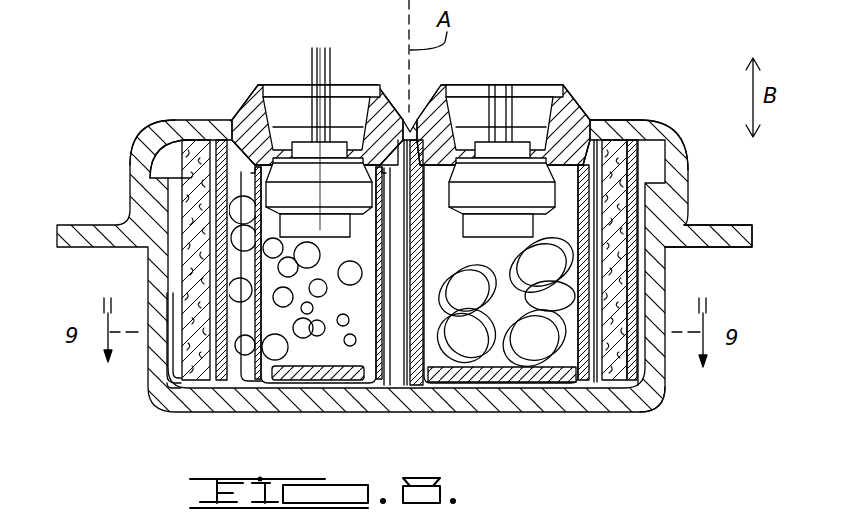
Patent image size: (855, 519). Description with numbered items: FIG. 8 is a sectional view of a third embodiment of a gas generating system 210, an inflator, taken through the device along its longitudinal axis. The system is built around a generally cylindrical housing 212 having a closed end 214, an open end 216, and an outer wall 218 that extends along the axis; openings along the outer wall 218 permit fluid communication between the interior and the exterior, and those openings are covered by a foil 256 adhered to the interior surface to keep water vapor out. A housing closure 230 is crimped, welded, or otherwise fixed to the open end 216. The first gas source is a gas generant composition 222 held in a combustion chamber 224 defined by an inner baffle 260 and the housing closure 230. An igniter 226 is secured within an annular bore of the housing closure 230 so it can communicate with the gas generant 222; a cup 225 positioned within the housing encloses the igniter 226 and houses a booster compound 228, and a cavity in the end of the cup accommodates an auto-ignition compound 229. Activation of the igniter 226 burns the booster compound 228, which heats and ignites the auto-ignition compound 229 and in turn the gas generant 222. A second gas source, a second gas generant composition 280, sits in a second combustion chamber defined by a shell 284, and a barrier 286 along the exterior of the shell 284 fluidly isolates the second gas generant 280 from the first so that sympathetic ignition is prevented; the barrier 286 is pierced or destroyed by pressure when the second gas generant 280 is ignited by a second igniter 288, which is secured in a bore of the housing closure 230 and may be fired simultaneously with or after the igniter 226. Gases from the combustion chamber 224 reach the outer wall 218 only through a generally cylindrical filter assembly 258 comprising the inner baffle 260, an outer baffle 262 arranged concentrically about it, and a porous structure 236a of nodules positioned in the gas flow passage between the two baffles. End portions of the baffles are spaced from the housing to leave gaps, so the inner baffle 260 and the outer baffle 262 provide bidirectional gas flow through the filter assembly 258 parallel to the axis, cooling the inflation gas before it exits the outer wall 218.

The gas generating system 210 is at (673, 461).
The housing 212 is at (545, 413).
The closed end 214 is at (670, 403).
The open end 216 is at (640, 110).
The outer wall 218 is at (657, 268).
The gas generant composition 222 is at (408, 250).
The combustion chamber 224 is at (177, 123).
The cup 225 is at (257, 357).
The igniter 226 is at (300, 100).
The booster compound 228 is at (298, 347).
The auto-ignition compound 229 is at (302, 378).
The housing closure 230 is at (597, 127).
The porous structure 236a is at (140, 148).
The foil 256 is at (170, 303).
The filter assembly 258 is at (168, 392).
The inner baffle 260 is at (227, 148).
The outer baffle 262 is at (150, 178).
The second gas generant composition 280 is at (520, 332).
The shell 284 is at (417, 370).
The barrier 286 is at (397, 373).
The second igniter 288 is at (520, 100).